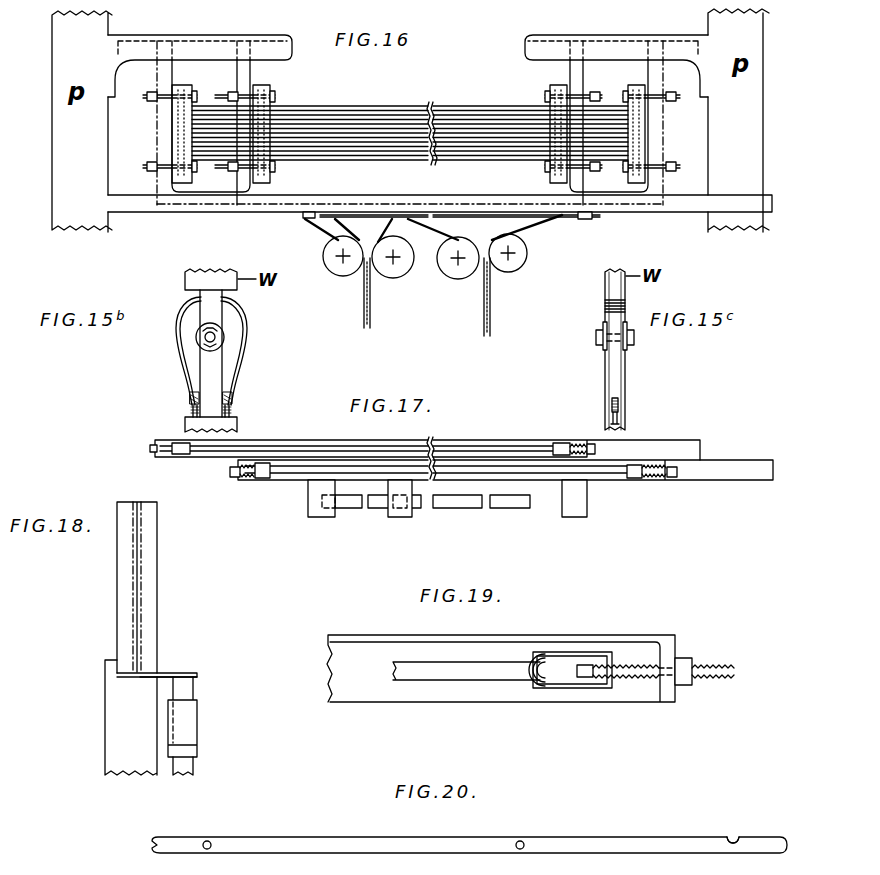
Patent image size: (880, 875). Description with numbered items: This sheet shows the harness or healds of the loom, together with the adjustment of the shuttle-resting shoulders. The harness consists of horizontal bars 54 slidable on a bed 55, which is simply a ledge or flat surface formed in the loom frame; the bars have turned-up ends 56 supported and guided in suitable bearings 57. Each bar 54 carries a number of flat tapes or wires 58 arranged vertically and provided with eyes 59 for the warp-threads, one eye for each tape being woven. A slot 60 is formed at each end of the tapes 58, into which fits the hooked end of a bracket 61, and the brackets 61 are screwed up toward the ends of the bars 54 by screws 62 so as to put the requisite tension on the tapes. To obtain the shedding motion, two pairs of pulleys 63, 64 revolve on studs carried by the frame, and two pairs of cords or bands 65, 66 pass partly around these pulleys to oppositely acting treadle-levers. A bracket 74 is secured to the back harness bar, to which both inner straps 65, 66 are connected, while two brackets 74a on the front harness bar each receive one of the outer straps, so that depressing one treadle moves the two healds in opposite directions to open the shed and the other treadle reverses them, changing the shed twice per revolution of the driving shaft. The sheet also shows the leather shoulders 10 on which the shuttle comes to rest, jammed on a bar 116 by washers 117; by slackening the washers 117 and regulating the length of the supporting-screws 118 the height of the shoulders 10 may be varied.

In FIG. 15B, the shoulders 10 is at (238, 323).
In FIG. 15C, the shoulders 10 is at (616, 361).
In FIG. 16, the horizontal bars 54 is at (248, 198).
In FIG. 17, the horizontal bars 54 is at (317, 447).
In FIG. 19, the horizontal bars 54 is at (348, 677).
In FIG. 16, the bed 55 is at (136, 222).
In FIG. 18, the bed 55 is at (146, 686).
In FIG. 16, the turned-up ends 56 is at (160, 84).
In FIG. 18, the turned-up ends 56 is at (158, 561).
In FIG. 16, the bearings 57 is at (213, 24).
In FIG. 16, the harness tapes 58 is at (470, 94).
In FIG. 17, the harness tapes 58 is at (509, 470).
In FIG. 19, the harness tapes 58 is at (454, 670).
In FIG. 20, the harness tapes 58 is at (396, 843).
In FIG. 20, the eyes 59 is at (211, 841).
In FIG. 19, the slot 60 is at (552, 688).
In FIG. 20, the slot 60 is at (731, 838).
In FIG. 16, the bracket 61 is at (162, 134).
In FIG. 17, the bracket 61 is at (264, 466).
In FIG. 19, the bracket 61 is at (603, 621).
In FIG. 16, the screws 62 is at (278, 98).
In FIG. 17, the screws 62 is at (148, 454).
In FIG. 19, the screws 62 is at (580, 683).
In FIG. 16, the pulleys 63 is at (342, 272).
In FIG. 17, the pulleys 63 is at (352, 508).
In FIG. 18, the pulleys 63 is at (187, 739).
In FIG. 16, the pulleys 64 is at (466, 278).
In FIG. 17, the pulleys 64 is at (507, 505).
In FIG. 16, the cords or bands 65 is at (360, 313).
In FIG. 18, the cords or bands 65 is at (192, 771).
In FIG. 16, the cords or bands 66 is at (481, 327).
In FIG. 16, the bracket 74 is at (399, 216).
In FIG. 17, the bracket 74 is at (402, 512).
In FIG. 18, the bracket 74 is at (128, 680).
In FIG. 16, the brackets 74a is at (304, 220).
In FIG. 17, the brackets 74a is at (308, 500).
In FIG. 18, the brackets 74a is at (165, 676).
In FIG. 15B, the bar 116 is at (207, 375).
In FIG. 15B, the washers 117 is at (192, 343).
In FIG. 15C, the washers 117 is at (632, 347).
In FIG. 15B, the supporting-screws 118 is at (234, 412).
In FIG. 15C, the supporting-screws 118 is at (605, 412).